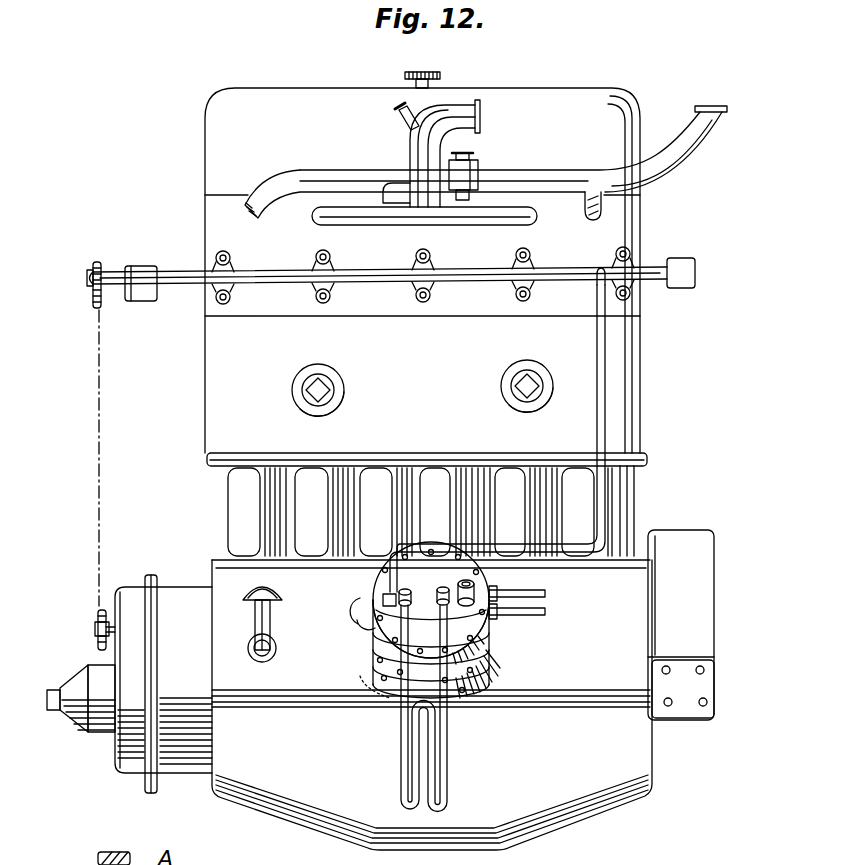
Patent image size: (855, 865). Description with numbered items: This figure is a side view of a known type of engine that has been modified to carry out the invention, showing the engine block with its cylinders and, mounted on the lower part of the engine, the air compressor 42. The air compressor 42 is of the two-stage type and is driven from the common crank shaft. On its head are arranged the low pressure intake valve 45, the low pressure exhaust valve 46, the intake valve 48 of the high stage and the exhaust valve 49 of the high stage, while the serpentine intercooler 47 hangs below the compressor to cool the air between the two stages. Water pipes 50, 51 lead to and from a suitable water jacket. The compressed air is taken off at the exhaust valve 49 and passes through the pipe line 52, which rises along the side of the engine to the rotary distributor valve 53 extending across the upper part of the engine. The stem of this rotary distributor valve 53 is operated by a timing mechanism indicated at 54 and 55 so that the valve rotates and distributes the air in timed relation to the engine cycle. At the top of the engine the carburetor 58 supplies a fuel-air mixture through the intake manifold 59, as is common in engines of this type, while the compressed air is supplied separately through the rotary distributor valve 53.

The air compressor 42 is at (487, 650).
The low pressure intake valve 45 is at (476, 588).
The low pressure exhaust valve 46 is at (446, 588).
The intercooler 47 is at (450, 762).
The intake valve of the high stage 48 is at (409, 590).
The exhaust valve of the high stage 49 is at (375, 597).
The water pipe 50 is at (546, 594).
The water pipe 51 is at (546, 614).
The pipe line 52 is at (607, 432).
The rotary distributor valve 53 is at (483, 287).
The timing mechanism 54 is at (97, 630).
The timing mechanism 55 is at (93, 300).
The carburetor 58 is at (480, 170).
The intake manifold 59 is at (413, 212).